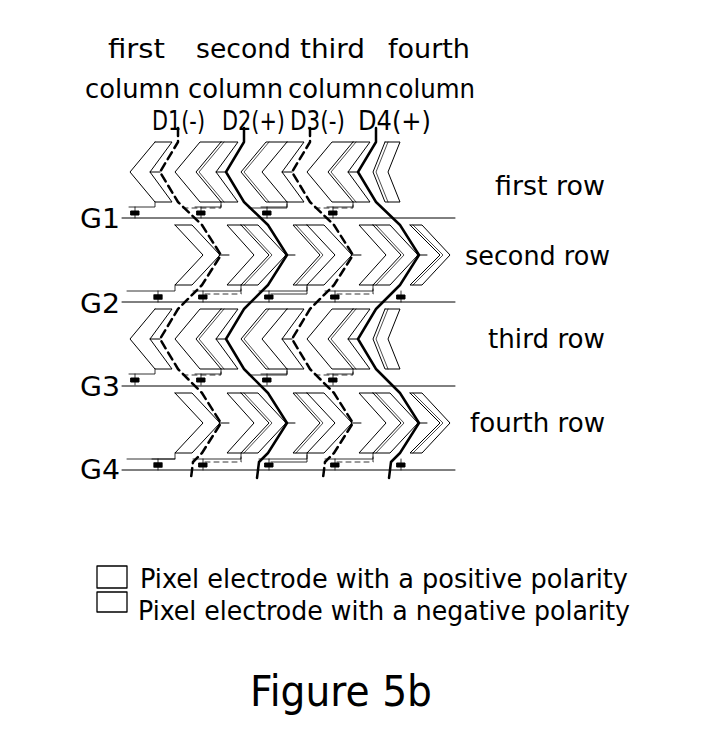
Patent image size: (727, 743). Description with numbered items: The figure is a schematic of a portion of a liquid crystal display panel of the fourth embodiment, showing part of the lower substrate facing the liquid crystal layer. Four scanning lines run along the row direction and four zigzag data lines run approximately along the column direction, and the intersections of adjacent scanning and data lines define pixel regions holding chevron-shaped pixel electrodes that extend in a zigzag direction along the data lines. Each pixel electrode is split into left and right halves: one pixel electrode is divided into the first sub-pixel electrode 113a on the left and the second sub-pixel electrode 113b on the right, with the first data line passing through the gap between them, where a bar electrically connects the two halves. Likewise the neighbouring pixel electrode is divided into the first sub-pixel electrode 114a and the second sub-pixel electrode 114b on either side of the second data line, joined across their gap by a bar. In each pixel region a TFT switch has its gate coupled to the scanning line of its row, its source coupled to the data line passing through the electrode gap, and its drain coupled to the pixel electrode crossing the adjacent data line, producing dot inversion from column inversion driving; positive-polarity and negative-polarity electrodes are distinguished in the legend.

The first sub-pixel electrode 113a is at (200, 422).
The second sub-pixel electrode 113b is at (198, 461).
The first sub-pixel electrode 114a is at (253, 462).
The second sub-pixel electrode 114b is at (280, 442).